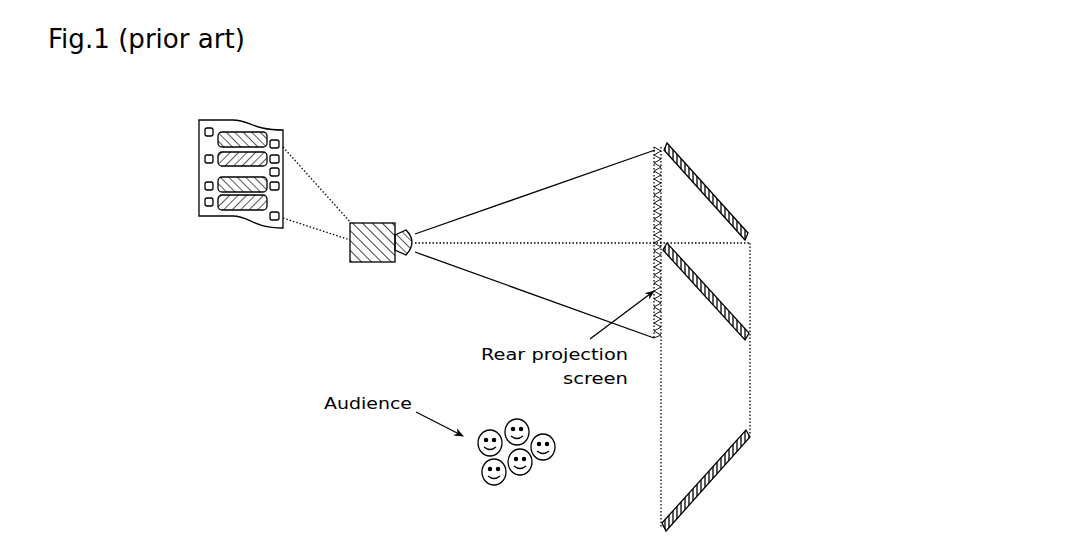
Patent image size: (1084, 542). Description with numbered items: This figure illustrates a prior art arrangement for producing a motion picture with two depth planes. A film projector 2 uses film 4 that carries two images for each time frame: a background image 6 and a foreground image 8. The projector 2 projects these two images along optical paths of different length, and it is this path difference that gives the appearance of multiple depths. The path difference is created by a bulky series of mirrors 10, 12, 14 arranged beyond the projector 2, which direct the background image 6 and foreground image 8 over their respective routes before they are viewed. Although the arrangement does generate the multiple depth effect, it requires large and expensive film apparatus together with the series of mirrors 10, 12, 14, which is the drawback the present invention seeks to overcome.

The film projector 2 is at (372, 265).
The film 4 is at (292, 164).
The background image 6 is at (221, 141).
The foreground image 8 is at (167, 185).
The mirror 10 is at (707, 193).
The mirror 12 is at (714, 298).
The mirror 14 is at (706, 483).